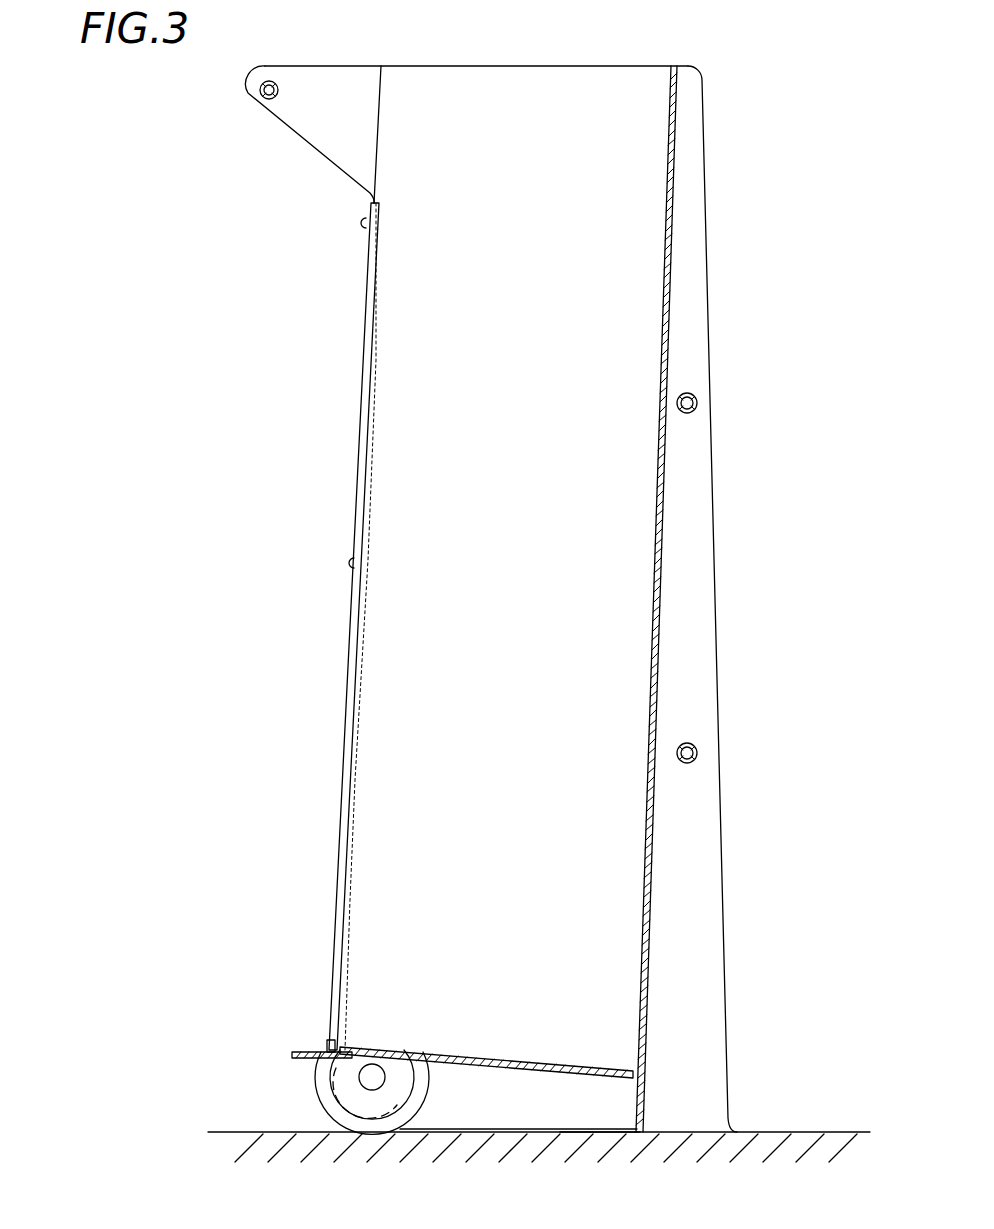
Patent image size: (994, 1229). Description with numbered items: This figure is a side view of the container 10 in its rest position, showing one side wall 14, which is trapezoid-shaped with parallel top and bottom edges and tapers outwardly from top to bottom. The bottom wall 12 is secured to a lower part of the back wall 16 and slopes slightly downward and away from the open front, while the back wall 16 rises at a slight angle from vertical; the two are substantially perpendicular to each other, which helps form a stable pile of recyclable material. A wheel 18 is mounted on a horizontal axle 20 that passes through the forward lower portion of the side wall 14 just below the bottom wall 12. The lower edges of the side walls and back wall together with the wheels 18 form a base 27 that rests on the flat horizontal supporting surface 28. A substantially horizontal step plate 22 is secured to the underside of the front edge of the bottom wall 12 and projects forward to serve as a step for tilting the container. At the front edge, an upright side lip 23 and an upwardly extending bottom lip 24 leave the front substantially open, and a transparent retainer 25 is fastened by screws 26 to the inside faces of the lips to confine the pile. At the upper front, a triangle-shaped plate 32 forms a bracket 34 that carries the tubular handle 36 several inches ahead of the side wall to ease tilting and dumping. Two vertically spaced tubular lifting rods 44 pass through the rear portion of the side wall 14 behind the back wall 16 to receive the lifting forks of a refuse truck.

The container 10 is at (512, 55).
The bottom wall 12 is at (463, 1066).
The side wall 14 is at (708, 252).
The back wall 16 is at (665, 246).
The wheel 18 is at (315, 1078).
The axle 20 is at (363, 1084).
The step plate 22 is at (300, 1050).
The side lip 23 is at (367, 268).
The bottom lip 24 is at (326, 1040).
The transparent retainer 25 is at (382, 220).
The screw 26 is at (361, 222).
The base 27 is at (612, 1137).
The supporting surface 28 is at (759, 1132).
The triangle-shaped plate 32 is at (305, 150).
The bracket 34 is at (298, 58).
The tubular handle 36 is at (259, 88).
The lifting rod 44 is at (689, 393).